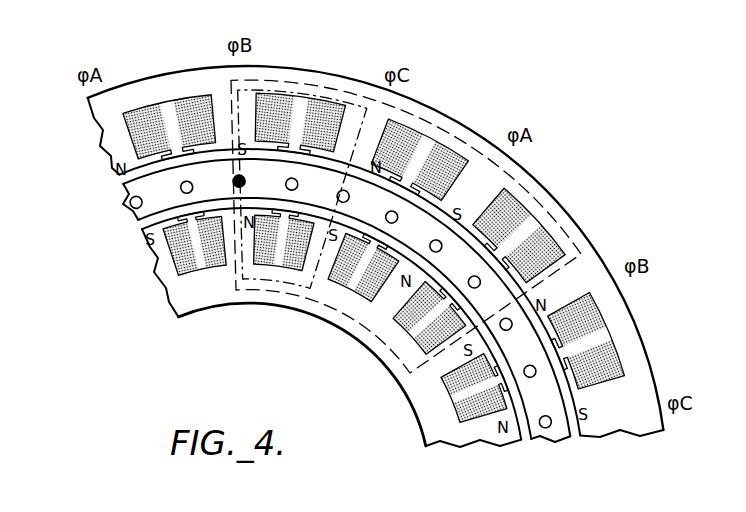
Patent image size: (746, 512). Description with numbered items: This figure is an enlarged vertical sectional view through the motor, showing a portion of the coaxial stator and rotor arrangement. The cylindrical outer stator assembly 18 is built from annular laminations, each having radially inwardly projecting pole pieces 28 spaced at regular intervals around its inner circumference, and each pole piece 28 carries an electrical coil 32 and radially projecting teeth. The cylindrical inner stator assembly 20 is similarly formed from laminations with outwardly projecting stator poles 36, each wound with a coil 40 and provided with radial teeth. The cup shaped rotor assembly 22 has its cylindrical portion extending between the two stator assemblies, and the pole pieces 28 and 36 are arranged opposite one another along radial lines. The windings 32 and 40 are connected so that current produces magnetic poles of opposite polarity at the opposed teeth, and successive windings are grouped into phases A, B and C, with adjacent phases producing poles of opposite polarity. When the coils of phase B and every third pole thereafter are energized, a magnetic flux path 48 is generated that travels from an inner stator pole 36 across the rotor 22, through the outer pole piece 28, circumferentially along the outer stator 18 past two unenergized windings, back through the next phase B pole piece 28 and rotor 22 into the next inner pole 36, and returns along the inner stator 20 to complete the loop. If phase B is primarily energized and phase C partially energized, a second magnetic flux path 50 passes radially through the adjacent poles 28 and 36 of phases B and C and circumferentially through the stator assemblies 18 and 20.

The outer stator assembly 18 is at (140, 79).
The inner stator assembly 20 is at (176, 302).
The rotor assembly 22 is at (123, 206).
The pole piece 28 is at (228, 128).
The electrical coil 32 is at (268, 104).
The stator pole 36 is at (250, 247).
The coil 40 is at (270, 250).
The magnetic flux path 48 is at (430, 122).
The second magnetic flux path 50 is at (322, 74).